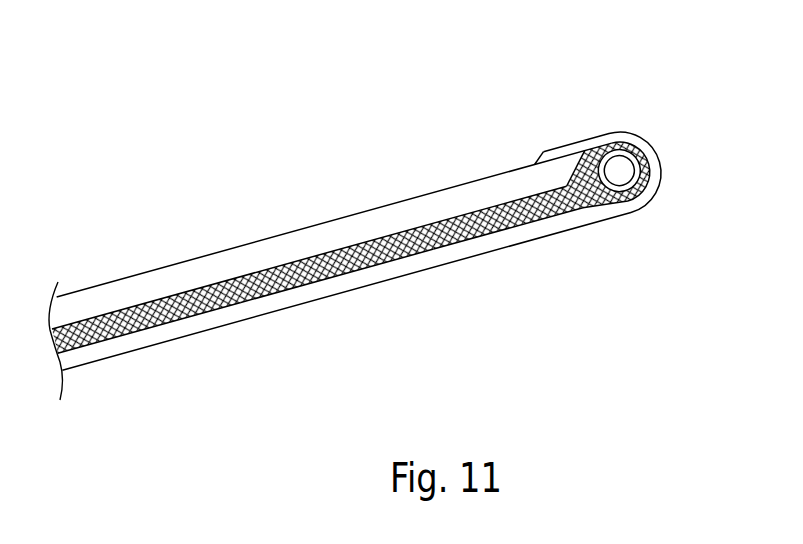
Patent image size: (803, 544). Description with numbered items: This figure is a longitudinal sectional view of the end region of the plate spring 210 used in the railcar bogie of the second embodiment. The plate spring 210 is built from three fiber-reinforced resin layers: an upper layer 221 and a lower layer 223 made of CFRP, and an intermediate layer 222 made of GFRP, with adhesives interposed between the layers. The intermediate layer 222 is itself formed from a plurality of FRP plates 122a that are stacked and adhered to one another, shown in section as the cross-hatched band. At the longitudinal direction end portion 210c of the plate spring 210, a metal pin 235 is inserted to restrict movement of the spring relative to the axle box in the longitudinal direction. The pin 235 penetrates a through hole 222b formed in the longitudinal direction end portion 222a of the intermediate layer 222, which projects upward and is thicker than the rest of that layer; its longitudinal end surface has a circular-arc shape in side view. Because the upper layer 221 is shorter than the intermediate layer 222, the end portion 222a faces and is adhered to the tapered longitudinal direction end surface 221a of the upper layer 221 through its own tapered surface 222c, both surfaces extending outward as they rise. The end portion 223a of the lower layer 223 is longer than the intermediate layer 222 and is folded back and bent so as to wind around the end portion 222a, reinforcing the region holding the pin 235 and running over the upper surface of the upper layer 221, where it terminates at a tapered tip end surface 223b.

The plate spring 210 is at (217, 240).
The longitudinal direction end portion of the plate spring 210c is at (493, 237).
The upper layer 221 is at (295, 242).
The longitudinal direction end surface of the upper layer 221a is at (563, 167).
The intermediate layer 222 is at (366, 268).
The longitudinal direction end portion of the intermediate layer 222a is at (593, 153).
The through hole 222b is at (598, 203).
The surface of the end portion of the intermediate layer 222c is at (567, 186).
The lower layer 223 is at (210, 318).
The longitudinal direction end portion of the lower layer 223a is at (637, 132).
The tip end surface 223b is at (533, 157).
The FRP plate 122a is at (288, 292).
The pin 235 is at (648, 170).